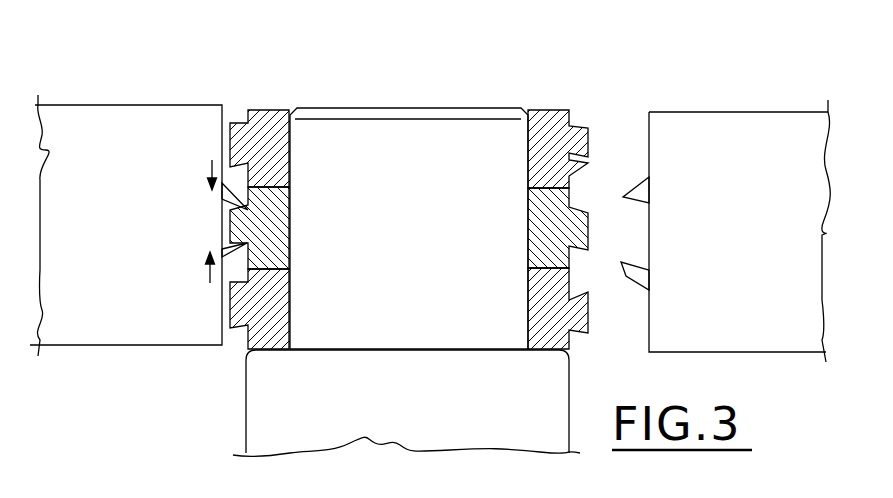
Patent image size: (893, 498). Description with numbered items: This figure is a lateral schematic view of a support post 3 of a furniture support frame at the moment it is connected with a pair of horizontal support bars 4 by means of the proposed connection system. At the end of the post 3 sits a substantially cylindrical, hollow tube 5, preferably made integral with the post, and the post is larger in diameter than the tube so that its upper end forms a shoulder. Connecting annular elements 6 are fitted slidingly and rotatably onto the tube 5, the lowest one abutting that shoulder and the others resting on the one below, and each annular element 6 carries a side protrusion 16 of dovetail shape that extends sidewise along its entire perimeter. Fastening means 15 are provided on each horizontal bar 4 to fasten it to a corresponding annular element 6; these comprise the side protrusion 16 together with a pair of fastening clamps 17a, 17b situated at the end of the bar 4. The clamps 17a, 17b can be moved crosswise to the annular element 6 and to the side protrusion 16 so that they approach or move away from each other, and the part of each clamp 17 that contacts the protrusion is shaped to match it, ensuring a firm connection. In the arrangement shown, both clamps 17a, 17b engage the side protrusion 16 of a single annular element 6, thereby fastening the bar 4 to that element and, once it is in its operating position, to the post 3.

The support post 3 is at (238, 412).
The support bar 4 is at (141, 95).
The tube 5 is at (457, 150).
The connecting annular element 6 is at (563, 99).
The fastening means 15 is at (226, 102).
The side protrusion 16 is at (235, 127).
The fastening clamp 17 is at (202, 229).
The fastening clamp 17a is at (222, 191).
The fastening clamp 17b is at (218, 252).